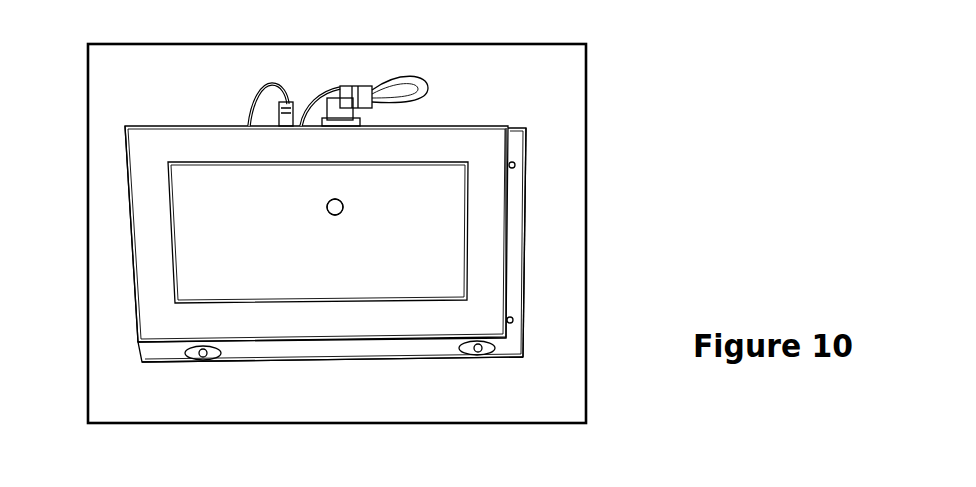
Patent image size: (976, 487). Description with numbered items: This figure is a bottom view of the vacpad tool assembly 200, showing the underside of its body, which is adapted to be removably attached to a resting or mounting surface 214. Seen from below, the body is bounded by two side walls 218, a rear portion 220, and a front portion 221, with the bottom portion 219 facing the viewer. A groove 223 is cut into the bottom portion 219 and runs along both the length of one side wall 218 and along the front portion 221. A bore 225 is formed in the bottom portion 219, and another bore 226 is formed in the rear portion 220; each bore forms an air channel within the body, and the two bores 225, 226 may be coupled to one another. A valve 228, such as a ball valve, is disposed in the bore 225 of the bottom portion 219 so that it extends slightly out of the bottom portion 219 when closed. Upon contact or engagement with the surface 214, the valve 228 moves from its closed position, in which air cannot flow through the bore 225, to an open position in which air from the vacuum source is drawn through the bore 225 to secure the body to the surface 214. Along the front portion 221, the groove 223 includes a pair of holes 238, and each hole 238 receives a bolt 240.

The vacpad tool assembly 200 is at (624, 178).
The surface 214 is at (550, 383).
The side walls 218 is at (128, 213).
The bottom portion 219 is at (190, 246).
The rear portion 220 is at (453, 126).
The front portion 221 is at (390, 360).
The groove 223 is at (517, 285).
The bore 225 is at (343, 205).
The bore 226 is at (382, 122).
The valve 228 is at (327, 205).
The holes 238 is at (190, 358).
The bolt 240 is at (202, 358).